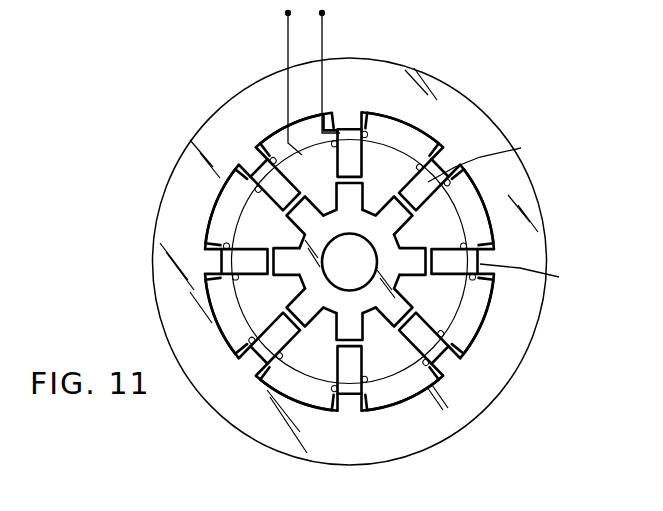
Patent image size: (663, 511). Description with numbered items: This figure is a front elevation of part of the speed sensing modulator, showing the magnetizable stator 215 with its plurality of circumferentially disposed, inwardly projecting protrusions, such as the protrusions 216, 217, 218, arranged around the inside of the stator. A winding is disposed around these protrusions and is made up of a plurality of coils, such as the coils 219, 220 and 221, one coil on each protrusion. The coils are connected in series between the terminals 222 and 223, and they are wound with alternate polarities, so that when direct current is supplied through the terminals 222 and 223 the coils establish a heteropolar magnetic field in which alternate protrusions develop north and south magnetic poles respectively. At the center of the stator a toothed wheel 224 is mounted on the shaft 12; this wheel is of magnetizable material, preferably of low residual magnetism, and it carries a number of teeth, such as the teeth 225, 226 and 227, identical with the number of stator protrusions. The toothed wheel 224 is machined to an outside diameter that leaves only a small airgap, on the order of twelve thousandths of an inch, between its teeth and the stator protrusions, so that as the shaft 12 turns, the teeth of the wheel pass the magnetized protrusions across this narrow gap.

The shaft 12 is at (360, 272).
The magnetizable stator 215 is at (240, 106).
The protrusion 216 is at (343, 178).
The protrusion 217 is at (399, 201).
The protrusion 218 is at (427, 250).
The coil 219 is at (348, 133).
The coil 220 is at (490, 161).
The coil 221 is at (535, 276).
The terminal 222 is at (286, 16).
The terminal 223 is at (324, 16).
The toothed wheel 224 is at (354, 315).
The tooth 225 is at (344, 208).
The tooth 226 is at (405, 218).
The tooth 227 is at (424, 265).